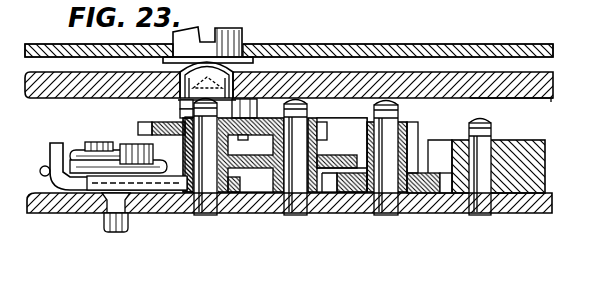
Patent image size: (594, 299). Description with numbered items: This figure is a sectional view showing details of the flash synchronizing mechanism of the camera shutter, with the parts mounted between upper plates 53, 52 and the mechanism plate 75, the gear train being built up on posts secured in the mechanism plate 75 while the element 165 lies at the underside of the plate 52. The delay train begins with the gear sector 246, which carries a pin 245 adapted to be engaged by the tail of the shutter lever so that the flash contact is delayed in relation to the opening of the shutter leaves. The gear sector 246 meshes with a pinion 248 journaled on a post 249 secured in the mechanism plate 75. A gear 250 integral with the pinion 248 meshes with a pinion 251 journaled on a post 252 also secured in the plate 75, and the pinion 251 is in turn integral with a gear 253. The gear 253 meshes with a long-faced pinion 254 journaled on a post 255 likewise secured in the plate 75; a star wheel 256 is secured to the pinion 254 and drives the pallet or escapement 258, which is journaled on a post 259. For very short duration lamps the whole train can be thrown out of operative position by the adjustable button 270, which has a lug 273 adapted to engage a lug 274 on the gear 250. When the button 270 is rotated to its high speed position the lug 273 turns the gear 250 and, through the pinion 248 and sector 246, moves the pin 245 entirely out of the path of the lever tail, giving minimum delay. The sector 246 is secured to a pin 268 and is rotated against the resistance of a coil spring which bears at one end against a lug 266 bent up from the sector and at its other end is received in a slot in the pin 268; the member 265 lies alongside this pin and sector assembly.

The lower plate 52 is at (550, 88).
The upper plate 53 is at (453, 53).
The mechanism plate 75 is at (525, 205).
The underside of lower plate 165 is at (492, 98).
The pin 245 is at (103, 227).
The gear sector 246 is at (158, 178).
The pinion 248 is at (243, 182).
The post 249 is at (202, 210).
The gear 250 is at (142, 133).
The pinion 251 is at (329, 130).
The post 252 is at (305, 216).
The gear 253 is at (342, 166).
The long-faced pinion 254 is at (412, 137).
The post 255 is at (380, 212).
The star wheel 256 is at (428, 193).
The pallet 258 is at (522, 153).
The post 259 is at (473, 212).
The pin 265 is at (78, 155).
The lug 266 is at (50, 166).
The pin 268 is at (127, 152).
The adjustable button 270 is at (240, 38).
The lug 273 is at (179, 103).
The lug 274 is at (179, 113).